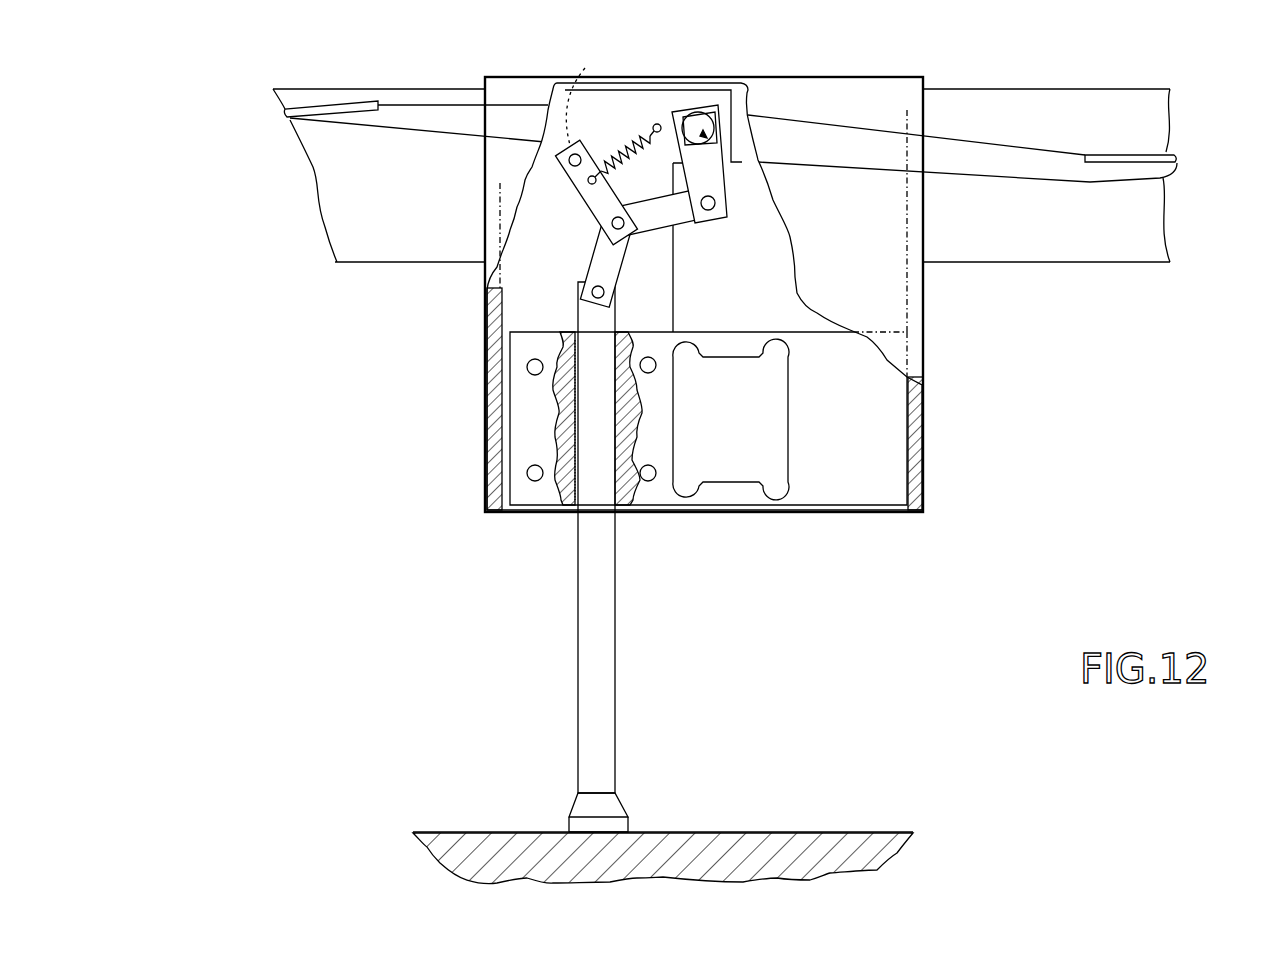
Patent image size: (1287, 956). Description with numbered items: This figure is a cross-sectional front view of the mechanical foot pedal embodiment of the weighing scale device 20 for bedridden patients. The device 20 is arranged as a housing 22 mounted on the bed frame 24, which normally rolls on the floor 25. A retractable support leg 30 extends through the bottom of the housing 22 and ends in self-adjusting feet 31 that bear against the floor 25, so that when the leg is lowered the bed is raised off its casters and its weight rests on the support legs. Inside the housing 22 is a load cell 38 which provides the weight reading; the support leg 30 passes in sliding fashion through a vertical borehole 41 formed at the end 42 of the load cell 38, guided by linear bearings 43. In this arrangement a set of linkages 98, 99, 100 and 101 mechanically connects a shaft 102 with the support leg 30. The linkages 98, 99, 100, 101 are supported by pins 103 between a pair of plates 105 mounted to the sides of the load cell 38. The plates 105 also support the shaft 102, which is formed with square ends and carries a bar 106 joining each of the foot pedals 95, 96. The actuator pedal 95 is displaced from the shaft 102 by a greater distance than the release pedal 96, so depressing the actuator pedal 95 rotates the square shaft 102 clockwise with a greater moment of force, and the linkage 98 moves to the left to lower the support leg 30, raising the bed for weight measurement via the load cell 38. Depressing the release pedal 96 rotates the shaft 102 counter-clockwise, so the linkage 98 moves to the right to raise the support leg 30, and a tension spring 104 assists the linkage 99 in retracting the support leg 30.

The weighing scale device 20 is at (657, 298).
The housing 22 is at (827, 513).
The bed frame 24 is at (1075, 88).
The floor 25 is at (795, 832).
The retractable support leg 30 is at (622, 612).
The self-adjusting feet 31 is at (623, 803).
The load cell 38 is at (713, 330).
The borehole 41 is at (555, 413).
The end of load cell 42 is at (517, 397).
The linear bearings 43 is at (570, 493).
The actuator pedal 95 is at (1185, 141).
The release pedal 96 is at (270, 100).
The linkage 98 is at (704, 296).
The linkage 99 is at (724, 186).
The linkage 100 is at (600, 216).
The linkage 101 is at (555, 281).
The shaft 102 is at (705, 108).
The pins 103 is at (683, 166).
The tension spring 104 is at (600, 80).
The plates 105 is at (512, 315).
The bar 106 is at (712, 201).